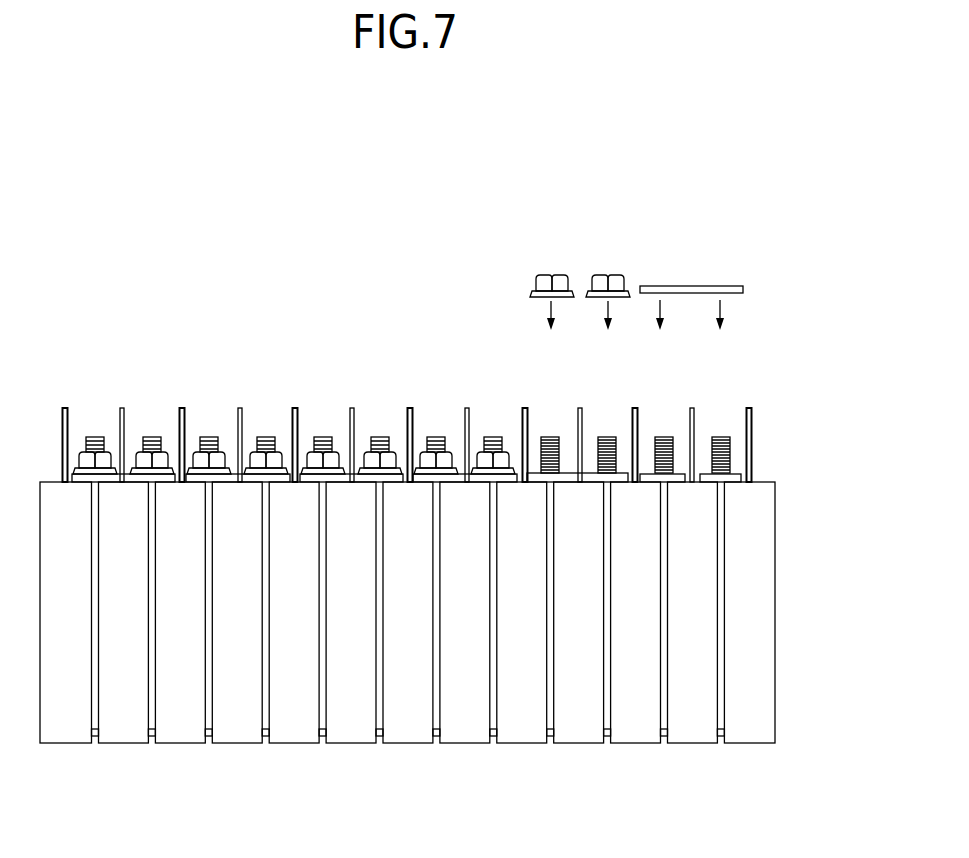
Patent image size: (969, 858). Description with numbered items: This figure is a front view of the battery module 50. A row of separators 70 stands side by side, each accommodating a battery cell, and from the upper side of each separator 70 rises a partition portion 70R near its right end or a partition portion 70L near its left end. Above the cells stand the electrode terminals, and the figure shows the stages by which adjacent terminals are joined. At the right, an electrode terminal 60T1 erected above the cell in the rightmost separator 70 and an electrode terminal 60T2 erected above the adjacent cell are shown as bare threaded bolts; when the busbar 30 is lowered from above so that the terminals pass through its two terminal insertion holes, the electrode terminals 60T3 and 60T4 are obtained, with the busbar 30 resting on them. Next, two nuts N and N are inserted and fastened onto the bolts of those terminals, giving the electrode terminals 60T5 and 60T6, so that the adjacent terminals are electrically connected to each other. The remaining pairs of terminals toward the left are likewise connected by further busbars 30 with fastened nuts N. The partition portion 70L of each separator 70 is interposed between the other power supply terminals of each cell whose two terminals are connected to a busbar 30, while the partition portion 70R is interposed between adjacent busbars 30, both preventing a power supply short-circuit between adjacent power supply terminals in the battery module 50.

The battery module 50 is at (374, 232).
The separator 70 is at (463, 715).
The partition portion 70R is at (68, 407).
The partition portion 70L is at (124, 407).
The busbar 30 is at (449, 482).
The nut N is at (546, 274).
The electrode terminal 60T1 is at (730, 435).
The electrode terminal 60T2 is at (672, 435).
The electrode terminal 60T3 is at (614, 435).
The electrode terminal 60T4 is at (557, 435).
The electrode terminal 60T5 is at (497, 435).
The electrode terminal 60T6 is at (440, 435).